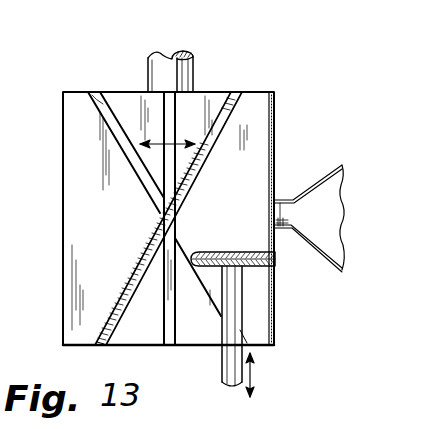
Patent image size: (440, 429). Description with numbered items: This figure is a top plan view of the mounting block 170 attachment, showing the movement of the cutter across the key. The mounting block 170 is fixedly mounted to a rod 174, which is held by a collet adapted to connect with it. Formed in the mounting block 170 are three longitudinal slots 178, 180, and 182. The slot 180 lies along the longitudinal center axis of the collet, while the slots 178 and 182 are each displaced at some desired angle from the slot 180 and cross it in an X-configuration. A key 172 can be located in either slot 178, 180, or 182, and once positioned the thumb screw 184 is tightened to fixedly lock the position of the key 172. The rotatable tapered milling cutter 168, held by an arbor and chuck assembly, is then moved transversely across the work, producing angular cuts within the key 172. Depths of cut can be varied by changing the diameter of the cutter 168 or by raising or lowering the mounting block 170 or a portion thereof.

The tapered milling cutter 168 is at (232, 251).
The mounting block 170 is at (82, 128).
The key 172 is at (133, 270).
The rod 174 is at (148, 72).
The longitudinal slot 178 is at (100, 347).
The longitudinal slot 180 is at (172, 112).
The longitudinal slot 182 is at (102, 102).
The thumb screw 184 is at (313, 186).